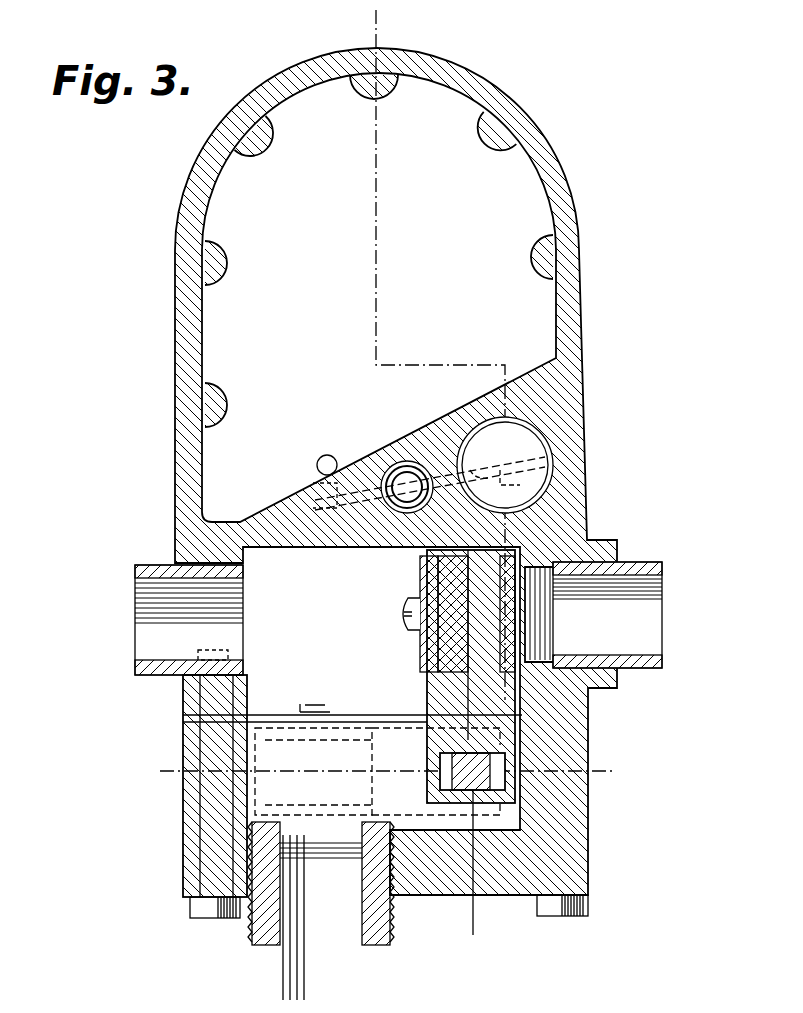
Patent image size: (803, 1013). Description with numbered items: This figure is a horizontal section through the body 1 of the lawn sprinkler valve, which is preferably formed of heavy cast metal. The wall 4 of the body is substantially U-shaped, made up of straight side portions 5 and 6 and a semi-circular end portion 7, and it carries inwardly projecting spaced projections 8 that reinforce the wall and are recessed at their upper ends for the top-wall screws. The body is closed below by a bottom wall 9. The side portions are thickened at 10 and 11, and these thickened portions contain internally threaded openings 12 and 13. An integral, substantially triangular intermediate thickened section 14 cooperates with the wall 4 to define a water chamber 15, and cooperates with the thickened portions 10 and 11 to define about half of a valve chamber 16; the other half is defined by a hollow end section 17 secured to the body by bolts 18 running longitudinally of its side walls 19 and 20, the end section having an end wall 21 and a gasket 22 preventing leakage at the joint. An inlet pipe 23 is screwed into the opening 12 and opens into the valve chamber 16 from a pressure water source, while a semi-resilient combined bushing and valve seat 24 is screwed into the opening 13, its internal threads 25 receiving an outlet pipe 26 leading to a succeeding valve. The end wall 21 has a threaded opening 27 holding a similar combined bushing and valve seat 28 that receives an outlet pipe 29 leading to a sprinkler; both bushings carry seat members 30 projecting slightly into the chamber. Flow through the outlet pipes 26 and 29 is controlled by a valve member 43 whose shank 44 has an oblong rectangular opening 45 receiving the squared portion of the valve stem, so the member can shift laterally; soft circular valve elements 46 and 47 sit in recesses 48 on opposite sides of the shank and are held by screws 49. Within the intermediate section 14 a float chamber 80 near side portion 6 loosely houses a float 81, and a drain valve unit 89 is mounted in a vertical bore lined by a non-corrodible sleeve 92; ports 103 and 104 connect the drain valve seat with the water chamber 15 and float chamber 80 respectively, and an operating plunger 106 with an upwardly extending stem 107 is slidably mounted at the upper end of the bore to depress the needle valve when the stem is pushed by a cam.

The body 1 is at (586, 222).
The wall 4 is at (556, 172).
The straight side portion 5 is at (178, 300).
The straight side portion 6 is at (586, 300).
The semi-circular end portion 7 is at (400, 48).
The projections 8 is at (470, 142).
The bottom wall 9 is at (215, 328).
The thickened portion 10 is at (185, 515).
The thickened portion 11 is at (615, 700).
The internally threaded opening 12 is at (185, 557).
The internally threaded opening 13 is at (610, 525).
The intermediate thickened section 14 is at (520, 372).
The water chamber 15 is at (243, 368).
The valve chamber 16 is at (260, 618).
The hollow end section 17 is at (455, 900).
The bolts 18 is at (218, 905).
The side wall 19 is at (183, 810).
The side wall 20 is at (592, 840).
The end wall 21 is at (432, 898).
The gasket 22 is at (187, 718).
The inlet pipe 23 is at (140, 590).
The combined bushing and valve seat 24 is at (635, 555).
The internal threads 25 is at (665, 640).
The outlet pipe 26 is at (660, 590).
The opening 27 is at (402, 905).
The combined bushing and valve seat 28 is at (262, 918).
The outlet pipe 29 is at (300, 950).
The seat members 30 is at (372, 825).
The valve member 43 is at (427, 690).
The shank 44 is at (425, 700).
The oblong rectangular opening 45 is at (520, 790).
The valve element 46 is at (425, 684).
The valve element 47 is at (540, 645).
The recesses 48 is at (425, 560).
The screws 49 is at (398, 612).
The float chamber 80 is at (580, 400).
The float 81 is at (523, 448).
The drain valve unit 89 is at (400, 466).
The sleeve 92 is at (412, 466).
The port 103 is at (326, 455).
The port 104 is at (505, 465).
The operating plunger 106 is at (388, 470).
The stem 107 is at (430, 462).